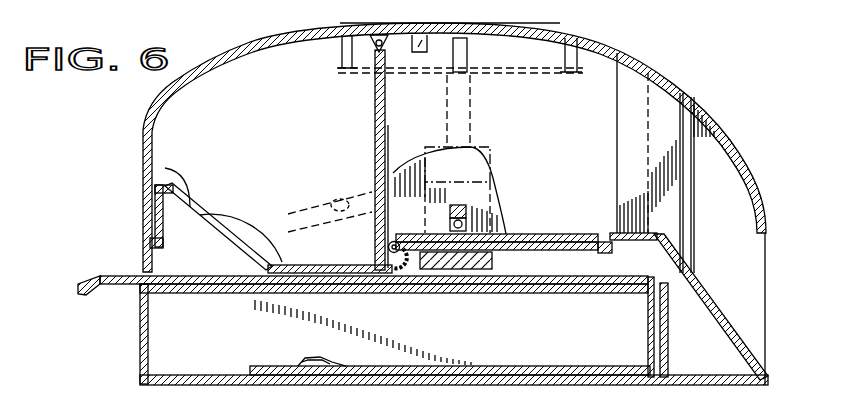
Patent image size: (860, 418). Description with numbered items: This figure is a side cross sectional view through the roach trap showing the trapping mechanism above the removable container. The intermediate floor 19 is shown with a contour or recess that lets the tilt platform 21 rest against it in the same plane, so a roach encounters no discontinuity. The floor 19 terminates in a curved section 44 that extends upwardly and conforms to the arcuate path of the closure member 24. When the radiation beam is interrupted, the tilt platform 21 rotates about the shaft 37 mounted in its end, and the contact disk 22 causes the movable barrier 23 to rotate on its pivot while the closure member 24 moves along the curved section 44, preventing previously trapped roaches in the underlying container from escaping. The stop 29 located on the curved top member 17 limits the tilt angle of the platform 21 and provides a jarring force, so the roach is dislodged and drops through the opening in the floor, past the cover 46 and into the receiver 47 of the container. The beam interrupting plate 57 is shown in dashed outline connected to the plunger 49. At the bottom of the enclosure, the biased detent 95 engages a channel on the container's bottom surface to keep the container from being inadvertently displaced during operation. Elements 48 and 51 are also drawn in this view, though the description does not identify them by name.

The curved top member 17 is at (143, 118).
The intermediate floor 19 is at (605, 248).
The tilt platform 21 is at (527, 234).
The contact disk 22 is at (490, 173).
The movable barrier 23 is at (267, 38).
The closure member 24 is at (155, 215).
The stop 29 is at (438, 24).
The shaft 37 is at (373, 252).
The curved section 44 is at (187, 202).
The cover 46 is at (130, 277).
The receiver 47 is at (133, 318).
The bottom wall 48 is at (140, 381).
The plunger 49 is at (462, 52).
The block 51 is at (494, 258).
The beam interrupting plate 57 is at (490, 150).
The biased detent 95 is at (318, 357).